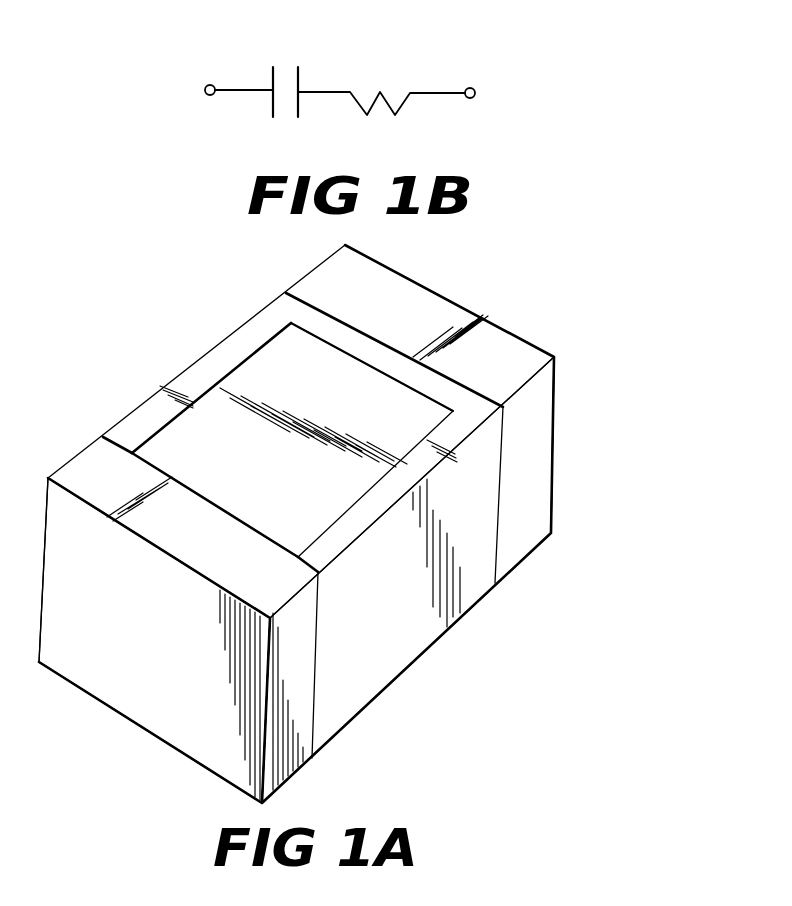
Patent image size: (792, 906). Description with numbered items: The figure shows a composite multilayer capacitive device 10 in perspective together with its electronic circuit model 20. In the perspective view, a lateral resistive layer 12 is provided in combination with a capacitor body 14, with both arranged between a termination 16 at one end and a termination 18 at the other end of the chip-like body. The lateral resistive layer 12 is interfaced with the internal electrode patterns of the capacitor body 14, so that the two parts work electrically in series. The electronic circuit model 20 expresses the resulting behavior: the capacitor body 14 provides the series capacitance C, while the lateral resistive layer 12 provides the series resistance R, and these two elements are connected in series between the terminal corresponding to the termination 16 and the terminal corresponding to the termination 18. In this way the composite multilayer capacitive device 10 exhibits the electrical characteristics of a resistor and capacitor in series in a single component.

In FIG. 1A, the composite multilayer capacitive device 10 is at (583, 368).
In FIG. 1A, the lateral resistive layer 12 is at (217, 387).
In FIG. 1A, the capacitor body 14 is at (383, 663).
In FIG. 1B, the termination 16 is at (210, 95).
In FIG. 1A, the termination 16 is at (145, 713).
In FIG. 1B, the termination 18 is at (470, 98).
In FIG. 1A, the termination 18 is at (448, 312).
In FIG. 1B, the electronic circuit model 20 is at (503, 97).